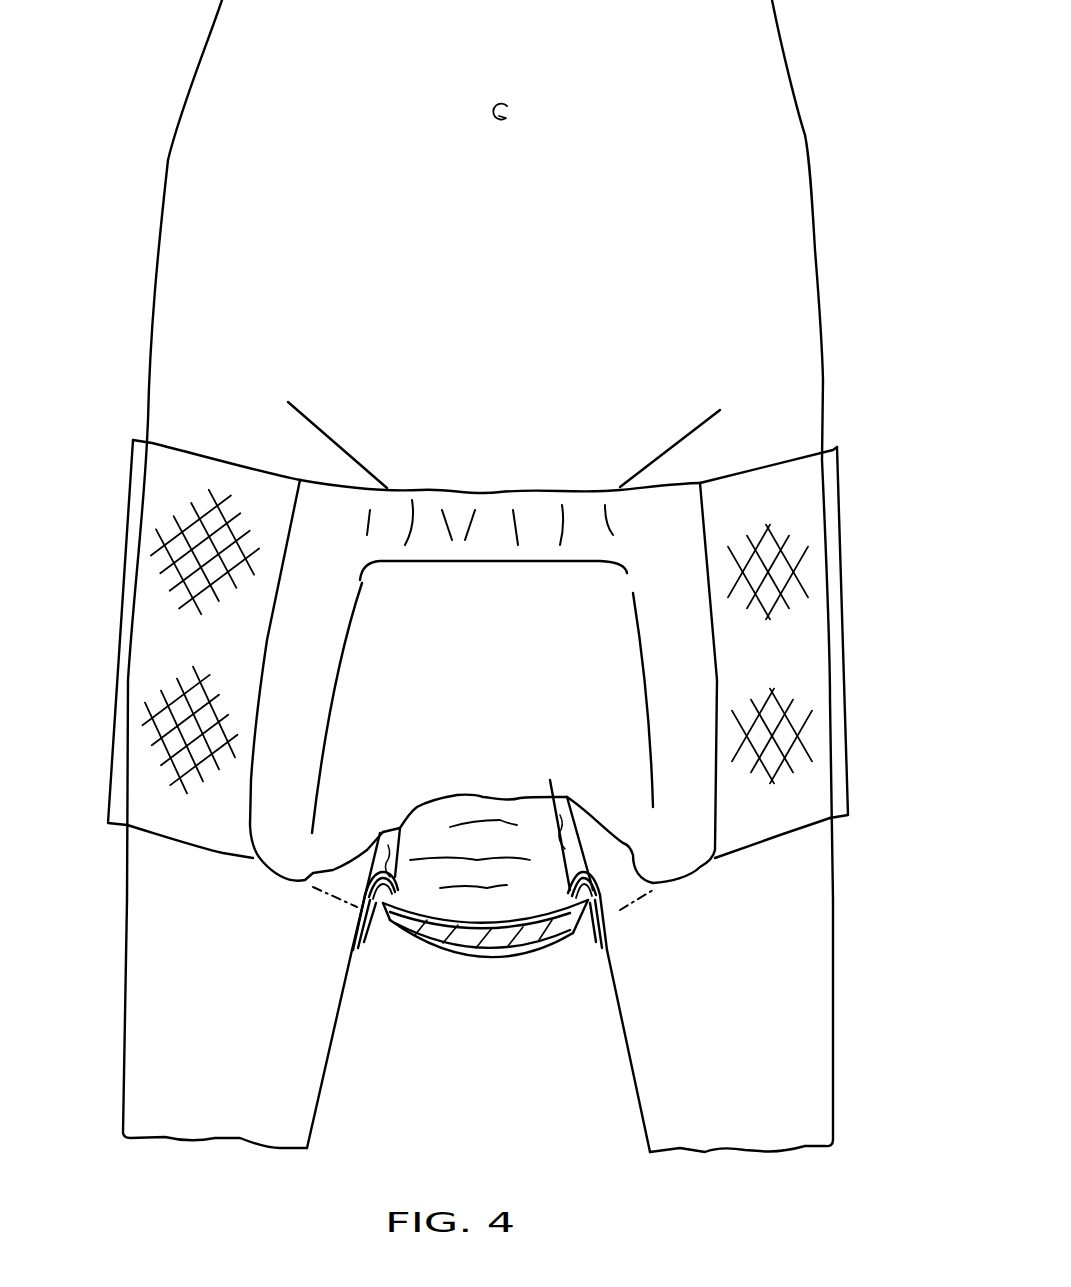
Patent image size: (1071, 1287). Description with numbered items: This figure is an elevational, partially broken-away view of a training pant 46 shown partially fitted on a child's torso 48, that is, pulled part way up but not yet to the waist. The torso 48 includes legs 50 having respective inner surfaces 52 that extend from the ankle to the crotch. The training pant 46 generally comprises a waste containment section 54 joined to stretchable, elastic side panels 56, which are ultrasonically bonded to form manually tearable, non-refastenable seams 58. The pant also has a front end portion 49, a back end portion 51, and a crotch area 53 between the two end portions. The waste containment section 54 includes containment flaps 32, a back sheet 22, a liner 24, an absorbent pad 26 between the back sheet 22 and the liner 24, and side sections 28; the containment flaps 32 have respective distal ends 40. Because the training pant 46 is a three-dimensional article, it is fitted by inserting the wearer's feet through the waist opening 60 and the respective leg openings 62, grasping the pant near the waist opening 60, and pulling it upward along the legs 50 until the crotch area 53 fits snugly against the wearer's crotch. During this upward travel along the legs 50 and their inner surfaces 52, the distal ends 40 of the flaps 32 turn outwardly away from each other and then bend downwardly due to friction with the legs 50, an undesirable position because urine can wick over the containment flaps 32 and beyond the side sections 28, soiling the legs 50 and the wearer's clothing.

The back sheet 22 is at (527, 955).
The liner 24 is at (505, 915).
The absorbent pad 26 is at (468, 950).
The side sections 28 is at (387, 940).
The containment flaps 32 is at (412, 817).
The distal ends 40 is at (372, 912).
The training pant 46 is at (871, 435).
The child's torso 48 is at (604, 150).
The front end portion 49 is at (87, 434).
The legs 50 is at (143, 1030).
The back end portion 51 is at (161, 541).
The inner surfaces 52 is at (350, 993).
The crotch area 53 is at (476, 1092).
The waste containment section 54 is at (503, 430).
The side panels 56 is at (157, 633).
The seams 58 is at (131, 477).
The waist opening 60 is at (674, 480).
The leg openings 62 is at (182, 843).